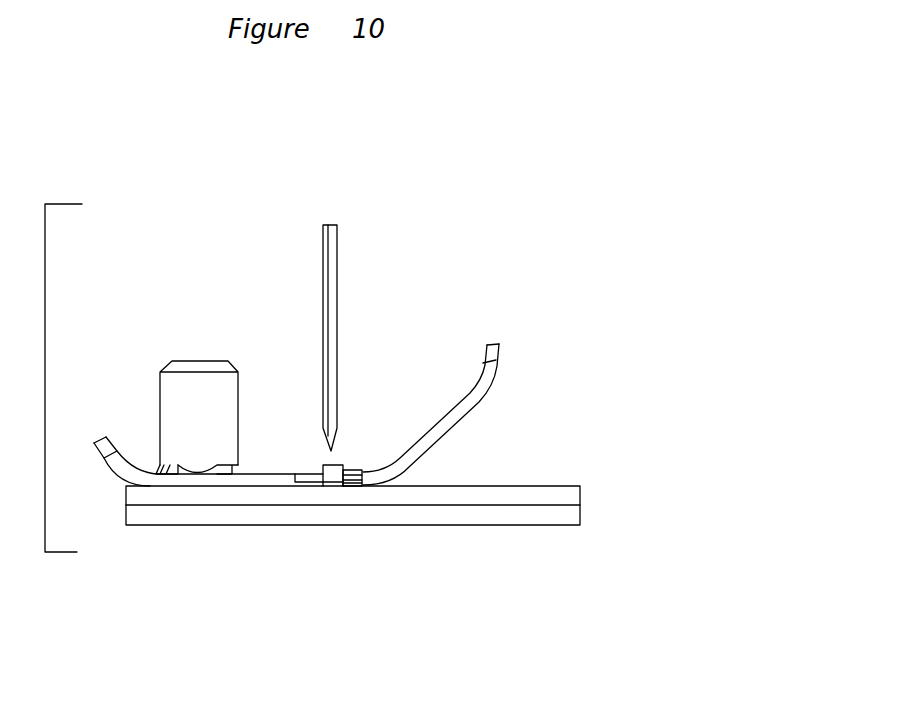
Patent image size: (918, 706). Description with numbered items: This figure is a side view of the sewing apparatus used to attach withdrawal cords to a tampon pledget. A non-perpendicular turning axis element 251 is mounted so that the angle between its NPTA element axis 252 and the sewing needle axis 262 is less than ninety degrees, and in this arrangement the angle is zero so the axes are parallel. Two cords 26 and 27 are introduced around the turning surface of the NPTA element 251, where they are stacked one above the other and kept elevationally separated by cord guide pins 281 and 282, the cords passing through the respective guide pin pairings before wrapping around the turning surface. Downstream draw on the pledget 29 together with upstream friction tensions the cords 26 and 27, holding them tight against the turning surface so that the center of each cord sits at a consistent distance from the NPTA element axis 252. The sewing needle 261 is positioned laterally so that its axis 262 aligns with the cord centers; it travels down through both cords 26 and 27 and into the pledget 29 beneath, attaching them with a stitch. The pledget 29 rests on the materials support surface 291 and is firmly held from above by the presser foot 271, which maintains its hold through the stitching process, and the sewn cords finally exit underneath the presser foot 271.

The cord 26 is at (345, 464).
The sewing needle 261 is at (338, 301).
The sewing needle axis 262 is at (336, 228).
The cord 27 is at (343, 500).
The presser foot 271 is at (478, 405).
The cord guide pin 281 is at (357, 467).
The cord guide pin 282 is at (360, 491).
The pledget 29 is at (540, 486).
The materials support surface 291 is at (568, 483).
The non-perpendicular turning axis element 251 is at (313, 489).
The NPTA element axis 252 is at (328, 491).